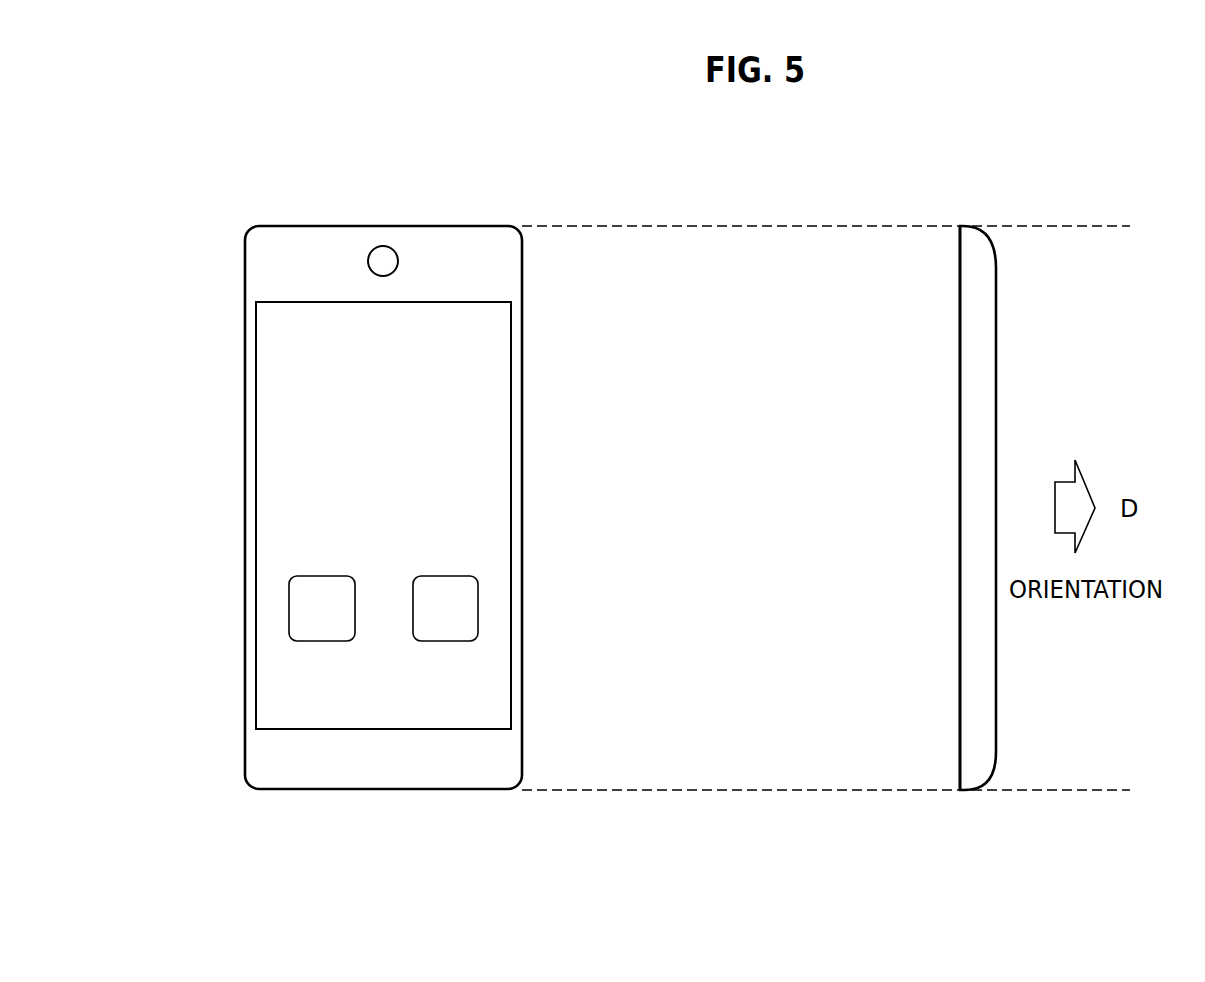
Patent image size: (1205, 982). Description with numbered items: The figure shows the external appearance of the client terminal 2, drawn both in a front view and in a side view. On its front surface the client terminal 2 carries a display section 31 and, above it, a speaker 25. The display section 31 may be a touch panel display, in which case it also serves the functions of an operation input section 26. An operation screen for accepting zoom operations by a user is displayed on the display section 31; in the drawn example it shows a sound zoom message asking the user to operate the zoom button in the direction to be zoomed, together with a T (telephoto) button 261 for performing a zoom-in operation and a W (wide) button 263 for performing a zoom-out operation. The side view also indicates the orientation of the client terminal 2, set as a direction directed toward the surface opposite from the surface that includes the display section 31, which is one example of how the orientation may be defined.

The client terminal 2 is at (461, 226).
The speaker 25 is at (379, 246).
The operation input section 26 is at (511, 513).
The display section 31 is at (608, 508).
The T (telephoto) button 261 is at (289, 612).
The W (wide) button 263 is at (478, 600).